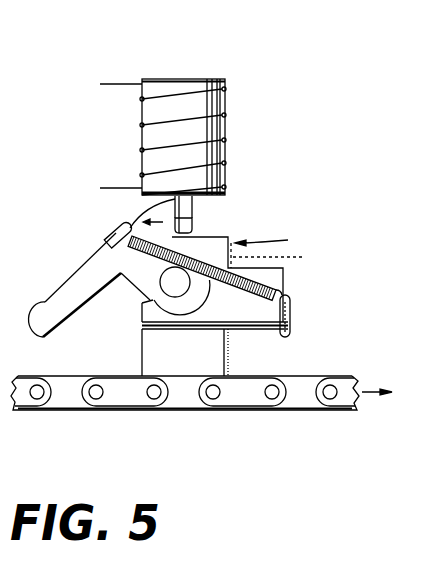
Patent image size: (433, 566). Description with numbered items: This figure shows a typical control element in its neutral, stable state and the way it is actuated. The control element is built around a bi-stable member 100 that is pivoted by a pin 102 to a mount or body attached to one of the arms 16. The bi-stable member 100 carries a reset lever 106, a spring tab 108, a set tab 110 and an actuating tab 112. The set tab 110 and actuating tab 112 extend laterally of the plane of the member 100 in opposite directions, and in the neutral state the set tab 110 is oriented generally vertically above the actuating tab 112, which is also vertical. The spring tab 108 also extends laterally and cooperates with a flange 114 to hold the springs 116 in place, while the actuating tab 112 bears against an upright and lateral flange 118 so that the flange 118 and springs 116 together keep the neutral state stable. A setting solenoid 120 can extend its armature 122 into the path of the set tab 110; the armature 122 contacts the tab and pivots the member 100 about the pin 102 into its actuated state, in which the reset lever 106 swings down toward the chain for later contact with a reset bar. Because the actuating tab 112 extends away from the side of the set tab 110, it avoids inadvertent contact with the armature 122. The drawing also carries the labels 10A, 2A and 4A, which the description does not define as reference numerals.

The setting solenoid 120 is at (170, 78).
The armature 122 is at (192, 205).
The set tab 110 is at (193, 221).
The spring tab 108 is at (108, 226).
The bi-stable member 100 is at (113, 258).
The reset lever 106 is at (50, 320).
The pin 102 is at (165, 279).
The block 10A is at (287, 328).
The motion arrow 2A is at (276, 233).
The actuating tab 112 is at (303, 257).
The springs 116 is at (250, 280).
The upright and lateral flange 118 is at (283, 289).
The flange 114 is at (265, 313).
The arm 16 is at (167, 343).
The chain 4A is at (298, 392).